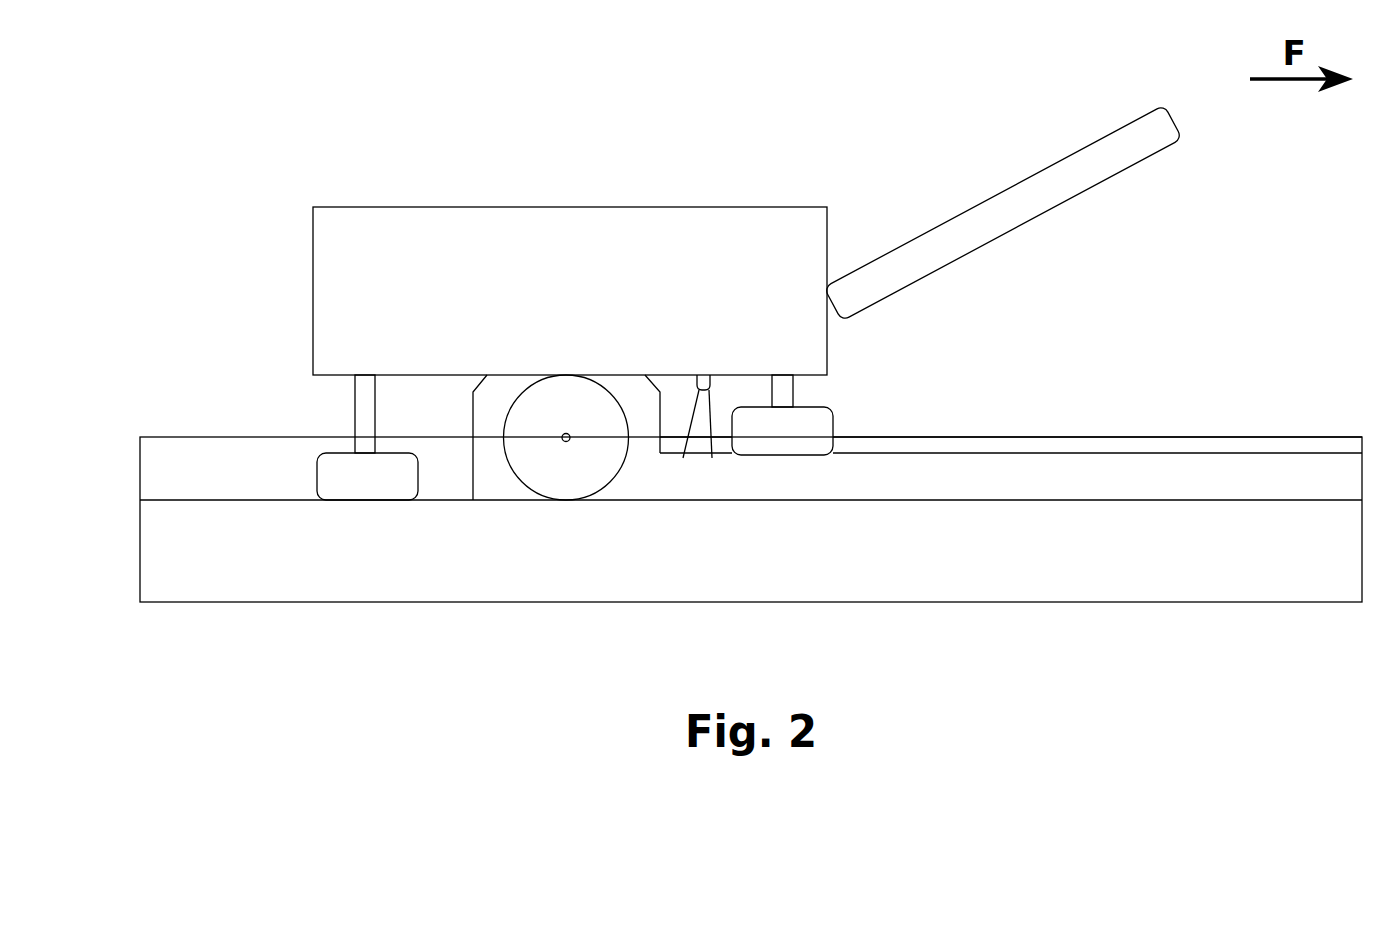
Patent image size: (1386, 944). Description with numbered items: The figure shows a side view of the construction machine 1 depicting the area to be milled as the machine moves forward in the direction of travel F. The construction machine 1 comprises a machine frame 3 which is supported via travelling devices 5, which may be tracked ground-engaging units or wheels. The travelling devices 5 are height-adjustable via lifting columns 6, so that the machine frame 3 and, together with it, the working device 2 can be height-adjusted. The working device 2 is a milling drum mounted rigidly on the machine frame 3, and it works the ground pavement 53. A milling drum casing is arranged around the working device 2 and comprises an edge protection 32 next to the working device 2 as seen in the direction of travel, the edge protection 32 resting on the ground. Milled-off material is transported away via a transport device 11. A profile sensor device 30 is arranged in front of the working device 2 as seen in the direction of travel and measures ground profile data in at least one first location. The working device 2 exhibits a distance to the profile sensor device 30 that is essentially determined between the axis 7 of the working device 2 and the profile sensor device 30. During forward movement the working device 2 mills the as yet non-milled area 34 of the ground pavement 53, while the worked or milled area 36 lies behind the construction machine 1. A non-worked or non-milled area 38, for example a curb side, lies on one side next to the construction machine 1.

The construction machine 1 is at (691, 142).
The working device 2 is at (596, 468).
The machine frame 3 is at (440, 241).
The travelling devices 5 is at (802, 450).
The lifting columns 6 is at (357, 407).
The axis 7 is at (566, 441).
The transport device 11 is at (1087, 165).
The profile sensor device 30 is at (703, 388).
The edge protection 32 is at (497, 480).
The non-worked area 34 is at (1075, 468).
The worked area 36 is at (193, 467).
The non-worked area next to the machine 38 is at (898, 447).
The ground pavement 53 is at (1274, 394).